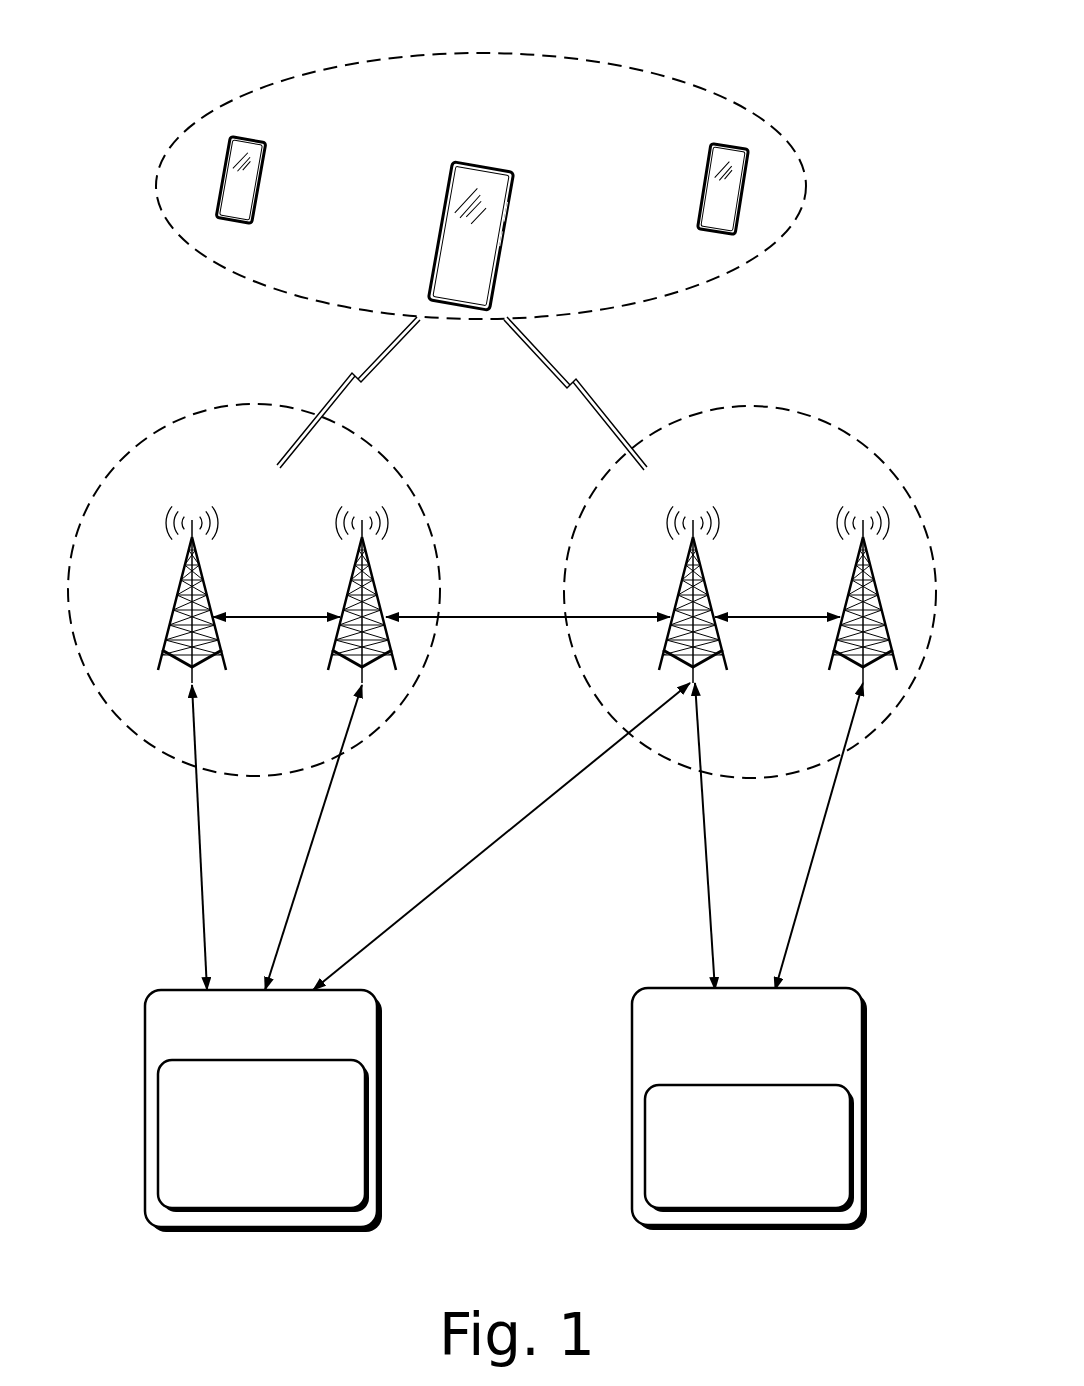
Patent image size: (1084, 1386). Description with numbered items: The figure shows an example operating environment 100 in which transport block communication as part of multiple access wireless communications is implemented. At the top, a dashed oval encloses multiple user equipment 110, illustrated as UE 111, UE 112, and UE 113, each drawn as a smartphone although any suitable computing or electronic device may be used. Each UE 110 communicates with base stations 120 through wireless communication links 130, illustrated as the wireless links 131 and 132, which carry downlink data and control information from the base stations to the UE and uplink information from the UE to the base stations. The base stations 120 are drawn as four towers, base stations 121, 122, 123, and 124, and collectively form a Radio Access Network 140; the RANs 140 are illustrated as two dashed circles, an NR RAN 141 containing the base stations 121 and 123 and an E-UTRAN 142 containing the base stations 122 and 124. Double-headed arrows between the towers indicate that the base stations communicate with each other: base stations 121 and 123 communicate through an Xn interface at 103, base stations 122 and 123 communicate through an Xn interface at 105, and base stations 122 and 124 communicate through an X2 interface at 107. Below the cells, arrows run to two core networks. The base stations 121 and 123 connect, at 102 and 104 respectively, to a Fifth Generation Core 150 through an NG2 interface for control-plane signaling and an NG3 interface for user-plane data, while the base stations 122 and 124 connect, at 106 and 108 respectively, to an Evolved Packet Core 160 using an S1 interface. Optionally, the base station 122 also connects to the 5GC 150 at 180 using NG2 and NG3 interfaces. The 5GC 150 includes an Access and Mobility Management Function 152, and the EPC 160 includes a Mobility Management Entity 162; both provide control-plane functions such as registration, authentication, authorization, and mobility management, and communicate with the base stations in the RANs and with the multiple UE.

The operating environment 100 is at (222, 36).
The user equipment 110 is at (729, 91).
The UE 111 is at (521, 162).
The UE 112 is at (273, 137).
The UE 113 is at (707, 147).
The wireless communication links 130 is at (463, 393).
The wireless link 131 is at (329, 392).
The wireless link 132 is at (601, 392).
The Radio Access Network 140 is at (502, 587).
The NR RAN 141 is at (401, 472).
The E-UTRAN 142 is at (604, 472).
The base stations 120 is at (502, 591).
The base station 121 is at (177, 578).
The base station 122 is at (684, 578).
The base station 123 is at (347, 578).
The base station 124 is at (852, 578).
The Xn interface connection 103 is at (303, 622).
The Xn interface connection 105 is at (535, 622).
The X2 interface connection 107 is at (812, 622).
The connection to 5GC 102 is at (201, 831).
The connection to 5GC 104 is at (318, 826).
The connection to EPC 106 is at (699, 831).
The connection to EPC 108 is at (814, 831).
The connection of base station 122 to 5GC 180 is at (480, 858).
The Fifth Generation Core 150 is at (263, 1111).
The Access and Mobility Management Function 152 is at (263, 1136).
The Evolved Packet Core 160 is at (749, 1109).
The Mobility Management Entity 162 is at (749, 1148).